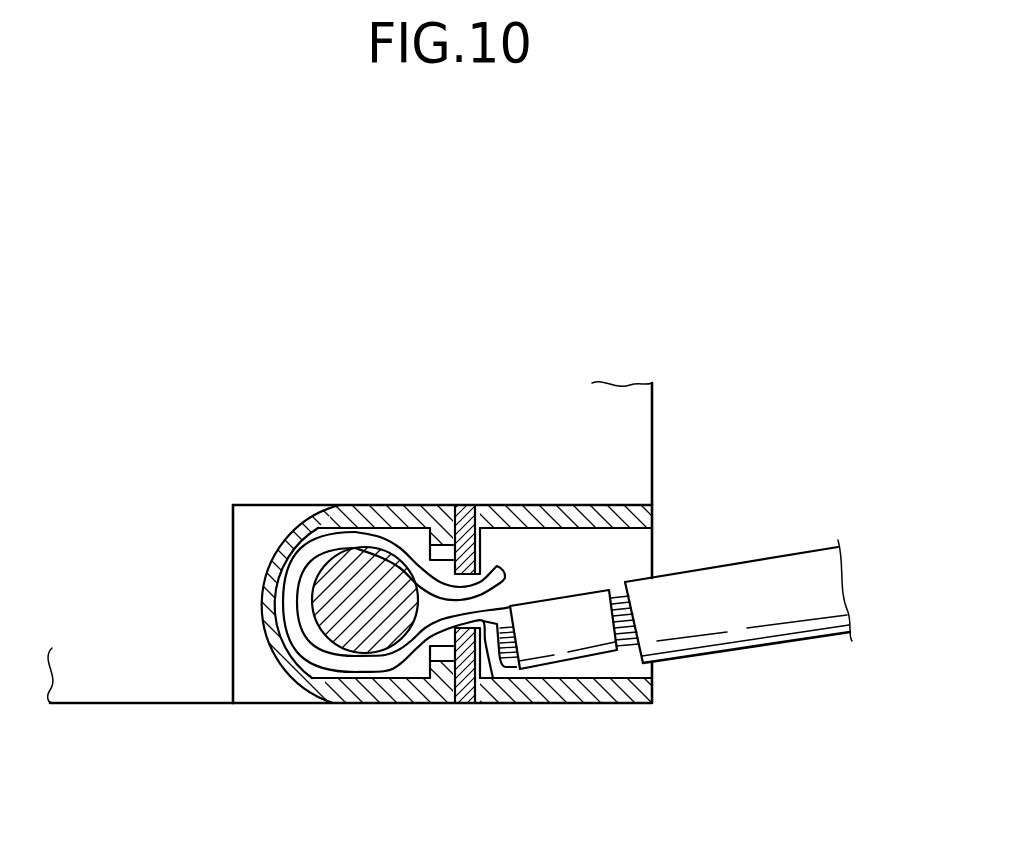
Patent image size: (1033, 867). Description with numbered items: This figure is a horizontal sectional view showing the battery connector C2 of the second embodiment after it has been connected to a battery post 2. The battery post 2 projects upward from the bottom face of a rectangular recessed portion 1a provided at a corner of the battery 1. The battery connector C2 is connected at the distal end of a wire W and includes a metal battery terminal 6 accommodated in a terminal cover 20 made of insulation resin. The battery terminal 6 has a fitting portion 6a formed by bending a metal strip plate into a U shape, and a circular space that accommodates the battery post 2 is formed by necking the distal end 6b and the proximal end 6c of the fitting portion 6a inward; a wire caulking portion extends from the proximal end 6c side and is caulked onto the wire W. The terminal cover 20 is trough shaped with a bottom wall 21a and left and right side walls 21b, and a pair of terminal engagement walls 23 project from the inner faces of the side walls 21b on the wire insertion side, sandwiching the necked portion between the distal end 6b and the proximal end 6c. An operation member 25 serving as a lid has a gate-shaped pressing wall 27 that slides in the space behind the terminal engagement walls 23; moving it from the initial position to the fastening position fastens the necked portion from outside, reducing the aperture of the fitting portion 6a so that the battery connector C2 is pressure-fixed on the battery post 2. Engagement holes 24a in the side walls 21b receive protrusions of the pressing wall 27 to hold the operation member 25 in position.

The battery 1 is at (105, 709).
The recessed portion 1a is at (262, 690).
The battery post 2 is at (356, 650).
The battery terminal 6 is at (520, 579).
The fitting portion 6a is at (297, 602).
The distal end 6b is at (508, 528).
The proximal end 6c is at (520, 703).
The terminal cover 20 is at (591, 494).
The bottom wall 21a is at (627, 553).
The side wall 21b is at (618, 505).
The terminal engagement wall 23 is at (379, 520).
The engagement hole 24a is at (463, 505).
The operation member 25 is at (436, 692).
The pressing wall 27 is at (495, 505).
The battery connector C2 is at (583, 324).
The wire W is at (777, 613).